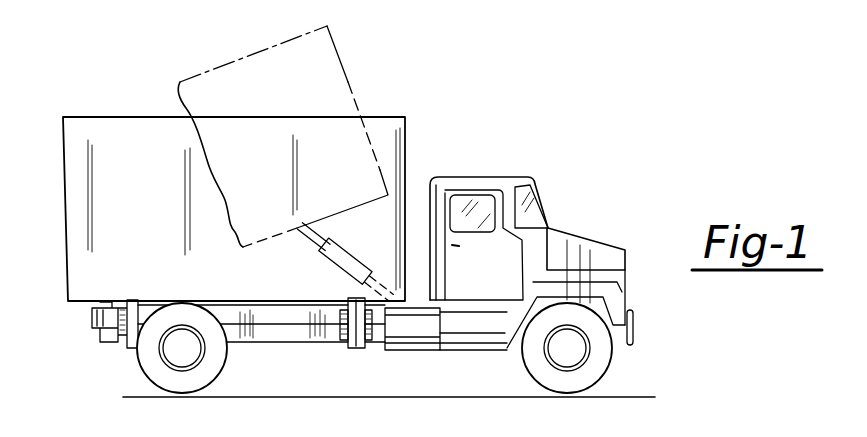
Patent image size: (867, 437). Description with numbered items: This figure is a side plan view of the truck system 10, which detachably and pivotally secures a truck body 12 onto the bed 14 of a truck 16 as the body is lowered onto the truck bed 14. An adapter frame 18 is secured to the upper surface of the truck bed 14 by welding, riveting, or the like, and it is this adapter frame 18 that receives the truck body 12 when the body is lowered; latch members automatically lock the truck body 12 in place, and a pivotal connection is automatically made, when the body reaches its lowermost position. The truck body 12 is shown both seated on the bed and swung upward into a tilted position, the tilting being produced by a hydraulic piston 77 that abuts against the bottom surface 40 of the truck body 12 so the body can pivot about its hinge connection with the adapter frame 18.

The system 10 is at (452, 88).
The truck body 12 is at (145, 152).
The truck bed 14 is at (294, 334).
The truck 16 is at (571, 214).
The adapter frame 18 is at (331, 316).
The bottom surface 40 is at (291, 234).
The hydraulic piston 77 is at (343, 259).